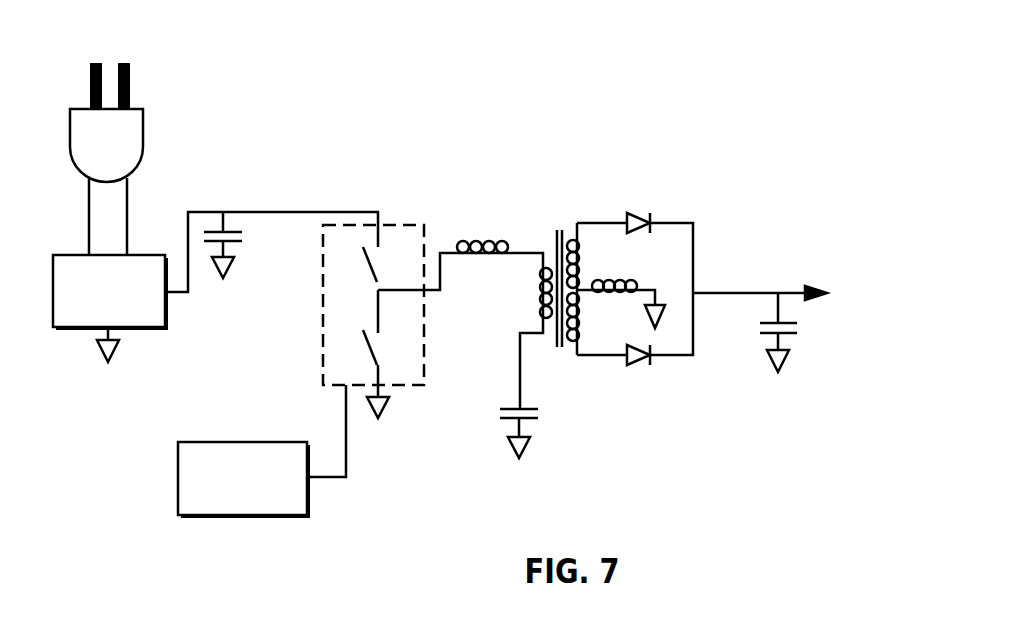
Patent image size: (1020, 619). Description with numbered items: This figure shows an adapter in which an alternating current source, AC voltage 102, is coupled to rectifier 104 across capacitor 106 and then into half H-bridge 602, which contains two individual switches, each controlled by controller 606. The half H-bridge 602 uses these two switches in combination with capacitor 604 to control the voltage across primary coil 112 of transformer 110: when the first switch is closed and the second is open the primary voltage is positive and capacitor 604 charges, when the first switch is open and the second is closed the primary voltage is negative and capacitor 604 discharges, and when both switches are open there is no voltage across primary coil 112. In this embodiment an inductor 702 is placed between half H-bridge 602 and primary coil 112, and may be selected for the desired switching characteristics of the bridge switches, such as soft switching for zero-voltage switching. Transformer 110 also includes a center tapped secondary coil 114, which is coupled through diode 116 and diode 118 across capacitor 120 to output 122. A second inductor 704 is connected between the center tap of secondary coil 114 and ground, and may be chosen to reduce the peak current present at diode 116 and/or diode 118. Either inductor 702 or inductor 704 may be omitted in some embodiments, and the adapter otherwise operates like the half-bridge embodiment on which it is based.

The AC voltage 102 is at (152, 100).
The rectifier 104 is at (110, 308).
The capacitor 106 is at (207, 223).
The transformer 110 is at (545, 206).
The primary coil 112 is at (533, 242).
The secondary coil 114 is at (551, 228).
The diode 116 is at (650, 202).
The diode 118 is at (628, 372).
The capacitor 120 is at (752, 340).
The output 122 is at (777, 272).
The half H-bridge 602 is at (323, 313).
The capacitor 604 is at (495, 427).
The controller 606 is at (262, 451).
The inductor 702 is at (470, 224).
The inductor 704 is at (617, 315).